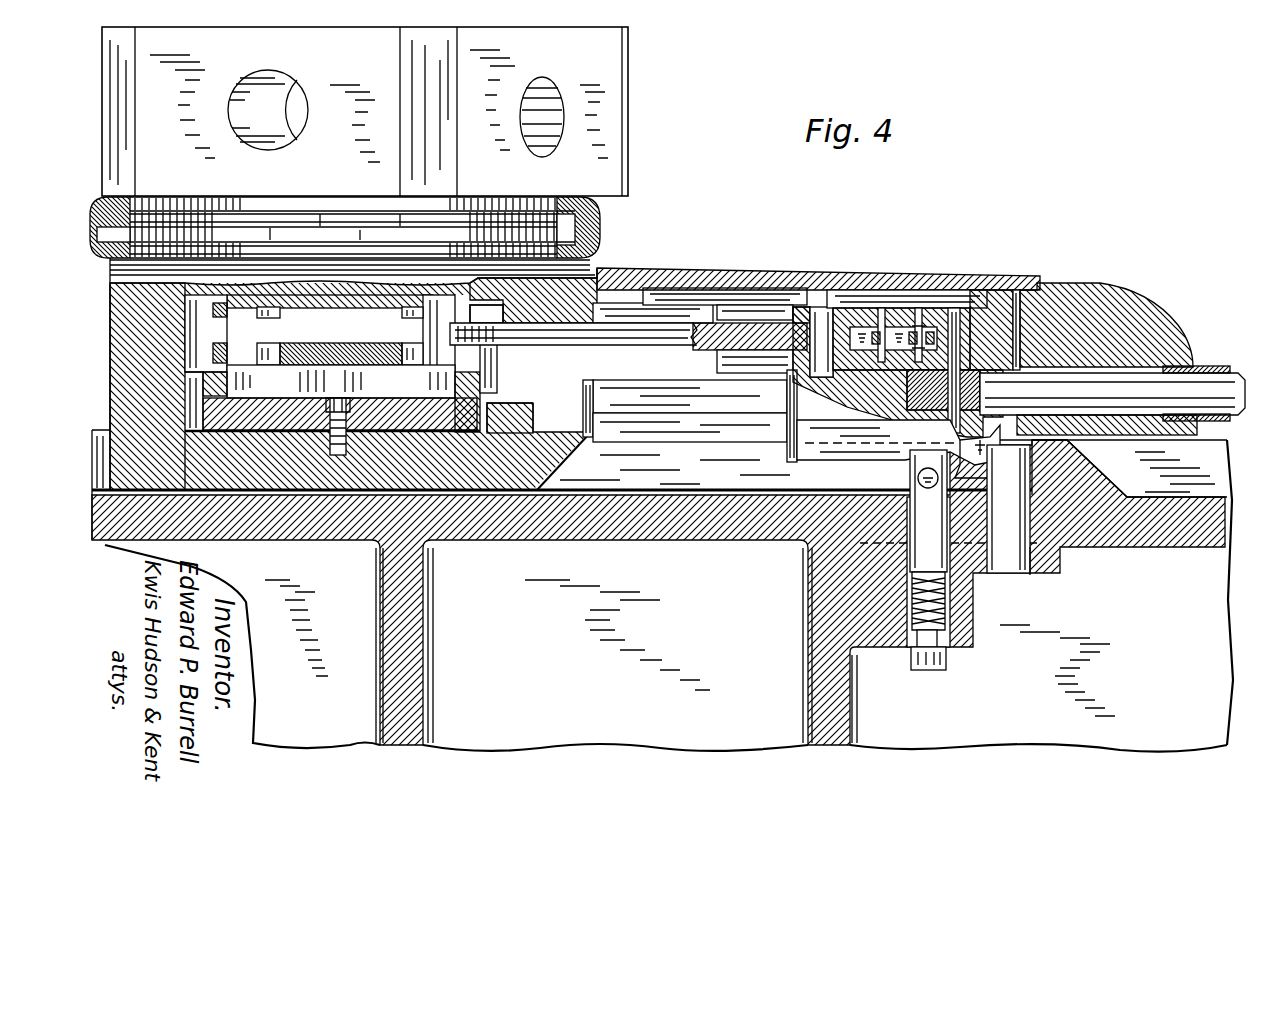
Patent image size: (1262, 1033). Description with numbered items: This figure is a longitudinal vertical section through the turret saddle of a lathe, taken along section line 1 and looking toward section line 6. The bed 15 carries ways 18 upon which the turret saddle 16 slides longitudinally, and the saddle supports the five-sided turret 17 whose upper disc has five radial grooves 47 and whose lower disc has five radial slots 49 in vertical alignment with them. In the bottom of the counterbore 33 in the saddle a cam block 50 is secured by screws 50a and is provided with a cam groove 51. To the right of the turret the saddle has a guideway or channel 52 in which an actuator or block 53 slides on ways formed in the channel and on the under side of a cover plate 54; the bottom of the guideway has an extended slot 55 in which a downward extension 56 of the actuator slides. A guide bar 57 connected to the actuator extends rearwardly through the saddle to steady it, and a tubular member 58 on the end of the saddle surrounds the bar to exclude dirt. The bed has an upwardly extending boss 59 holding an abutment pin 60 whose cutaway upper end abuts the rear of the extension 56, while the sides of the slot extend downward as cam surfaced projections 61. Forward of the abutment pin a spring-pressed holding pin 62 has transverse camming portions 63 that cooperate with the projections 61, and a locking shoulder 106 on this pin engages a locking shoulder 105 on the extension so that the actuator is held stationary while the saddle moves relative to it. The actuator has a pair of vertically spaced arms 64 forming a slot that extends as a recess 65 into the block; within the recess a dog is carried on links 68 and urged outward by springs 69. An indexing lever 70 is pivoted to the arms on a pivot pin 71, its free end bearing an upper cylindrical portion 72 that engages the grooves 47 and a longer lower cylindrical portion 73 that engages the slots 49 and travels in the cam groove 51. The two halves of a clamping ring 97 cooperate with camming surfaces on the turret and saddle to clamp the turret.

The section line 1- 1 is at (613, 233).
The section line 6- 6 is at (112, 325).
The bed 15 is at (801, 672).
The turret saddle 16 is at (1112, 298).
The turret 17 is at (606, 98).
The ways 18 is at (1213, 450).
The counterbore 33 is at (187, 315).
The radial grooves 47 is at (260, 311).
The radial slots 49 is at (266, 349).
The cam block 50 is at (302, 422).
The screws 50a is at (343, 397).
The cam groove 51 is at (415, 380).
The guideway or channel 52 is at (632, 395).
The actuator or block 53 is at (978, 316).
The cover plate 54 is at (822, 273).
The slot 55 is at (665, 435).
The downward extension 56 is at (800, 462).
The guide bar 57 is at (1112, 406).
The tubular member 58 is at (1196, 365).
The boss 59 is at (1071, 476).
The abutment pin 60 is at (1007, 561).
The cam surfaced projections 61 is at (967, 476).
The spring-pressed holding pin 62 is at (918, 490).
The camming portions 63 is at (927, 492).
The arms 64 is at (750, 300).
The recess 65 is at (866, 330).
The links 68 is at (876, 330).
The springs 69 is at (914, 330).
The indexing lever 70 is at (640, 335).
The pivot pin 71 is at (898, 372).
The cylindrical portion 72 is at (505, 314).
The cylindrical portion 73 is at (498, 378).
The clamping ring 97 is at (601, 221).
The locking shoulder 105 is at (977, 455).
The locking shoulder 106 is at (951, 456).